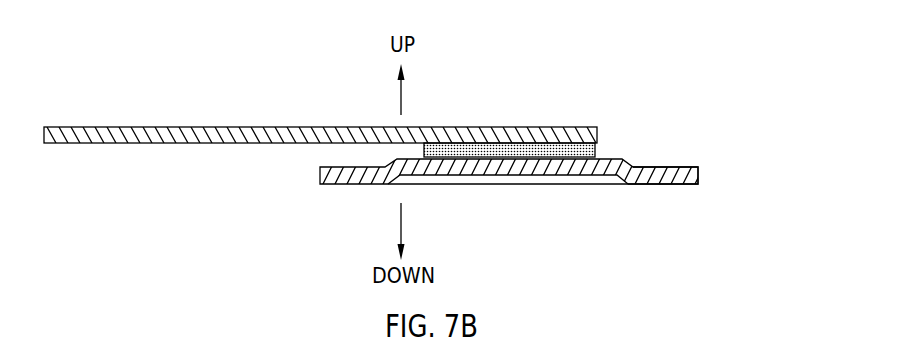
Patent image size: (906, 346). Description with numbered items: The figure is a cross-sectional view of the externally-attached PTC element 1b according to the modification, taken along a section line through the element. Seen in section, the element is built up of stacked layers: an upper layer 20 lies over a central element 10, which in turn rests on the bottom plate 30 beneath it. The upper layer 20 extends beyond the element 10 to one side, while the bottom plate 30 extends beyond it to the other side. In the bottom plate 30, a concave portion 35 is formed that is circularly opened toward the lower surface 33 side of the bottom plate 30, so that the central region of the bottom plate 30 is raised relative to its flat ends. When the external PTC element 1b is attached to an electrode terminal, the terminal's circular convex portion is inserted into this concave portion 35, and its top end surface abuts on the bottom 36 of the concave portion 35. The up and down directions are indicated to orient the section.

The externally-attached PTC element 1b is at (489, 74).
The adhesive layer (stippled member) 10 is at (596, 154).
The upper plate / cover member 20 is at (322, 127).
The bottom plate 30 is at (353, 185).
The lower surface 33 is at (672, 190).
The concave portion 35 is at (504, 190).
The bottom 36 is at (423, 188).